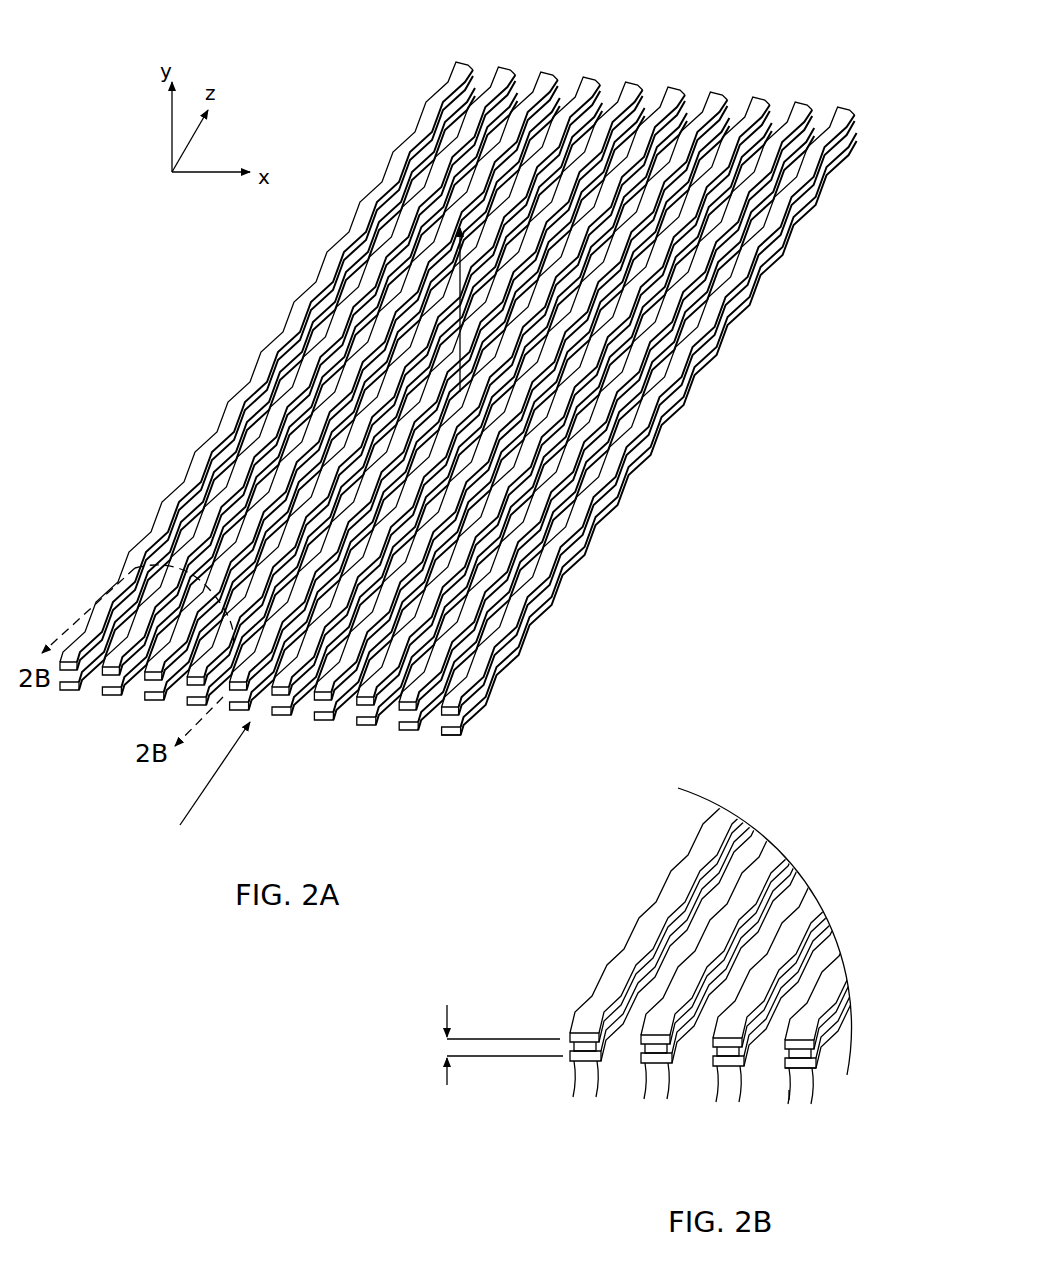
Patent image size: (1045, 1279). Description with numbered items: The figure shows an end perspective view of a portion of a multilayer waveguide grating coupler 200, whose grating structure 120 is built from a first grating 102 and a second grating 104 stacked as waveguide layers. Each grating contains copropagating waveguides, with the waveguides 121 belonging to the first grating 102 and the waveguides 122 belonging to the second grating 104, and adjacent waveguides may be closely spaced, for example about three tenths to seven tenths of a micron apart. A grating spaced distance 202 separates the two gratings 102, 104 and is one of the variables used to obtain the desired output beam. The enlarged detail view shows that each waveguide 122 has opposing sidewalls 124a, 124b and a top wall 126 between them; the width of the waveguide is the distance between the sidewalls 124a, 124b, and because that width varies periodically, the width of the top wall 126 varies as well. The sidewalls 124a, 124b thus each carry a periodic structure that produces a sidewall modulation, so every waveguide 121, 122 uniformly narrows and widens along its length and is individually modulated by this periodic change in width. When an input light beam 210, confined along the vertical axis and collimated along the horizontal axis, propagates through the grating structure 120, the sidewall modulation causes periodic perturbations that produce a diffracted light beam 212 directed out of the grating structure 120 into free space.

In FIG. 2A, the grating structure 120 is at (208, 378).
In FIG. 2A, the copropagating waveguide 122 is at (538, 74).
In FIG. 2B, the copropagating waveguide 122 is at (657, 891).
In FIG. 2A, the sidewall 124a is at (440, 100).
In FIG. 2B, the sidewall 124a is at (742, 838).
In FIG. 2A, the sidewall 124b is at (468, 72).
In FIG. 2B, the sidewall 124b is at (598, 1064).
In FIG. 2B, the top wall 126 is at (766, 852).
In FIG. 2A, the copropagating waveguide 121 is at (327, 720).
In FIG. 2B, the copropagating waveguide 121 is at (679, 1107).
In FIG. 2A, the first grating 102 is at (466, 742).
In FIG. 2B, the first grating 102 is at (790, 1082).
In FIG. 2A, the second grating 104 is at (480, 690).
In FIG. 2B, the second grating 104 is at (828, 1056).
In FIG. 2A, the multilayer waveguide grating coupler 200 is at (780, 360).
In FIG. 2B, the grating spaced distance 202 is at (447, 1078).
In FIG. 2A, the input light beam 210 is at (203, 794).
In FIG. 2A, the diffracted light beam 212 is at (456, 283).